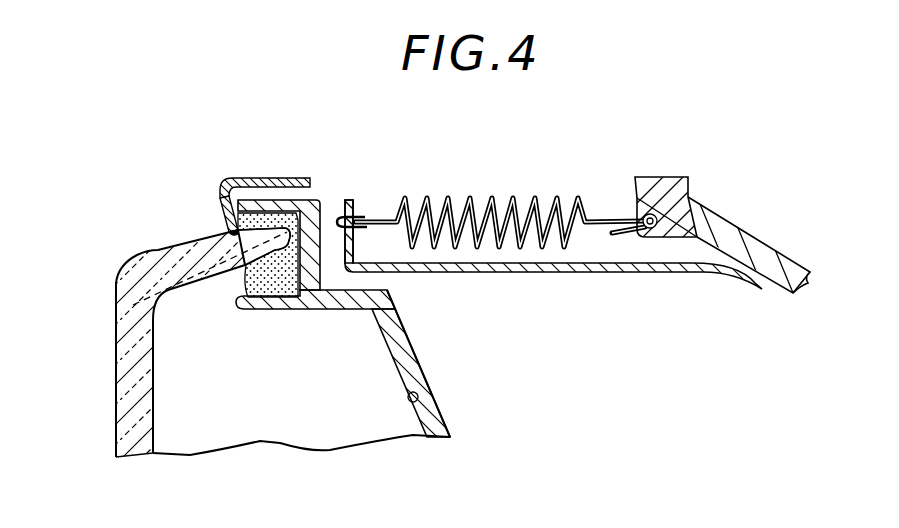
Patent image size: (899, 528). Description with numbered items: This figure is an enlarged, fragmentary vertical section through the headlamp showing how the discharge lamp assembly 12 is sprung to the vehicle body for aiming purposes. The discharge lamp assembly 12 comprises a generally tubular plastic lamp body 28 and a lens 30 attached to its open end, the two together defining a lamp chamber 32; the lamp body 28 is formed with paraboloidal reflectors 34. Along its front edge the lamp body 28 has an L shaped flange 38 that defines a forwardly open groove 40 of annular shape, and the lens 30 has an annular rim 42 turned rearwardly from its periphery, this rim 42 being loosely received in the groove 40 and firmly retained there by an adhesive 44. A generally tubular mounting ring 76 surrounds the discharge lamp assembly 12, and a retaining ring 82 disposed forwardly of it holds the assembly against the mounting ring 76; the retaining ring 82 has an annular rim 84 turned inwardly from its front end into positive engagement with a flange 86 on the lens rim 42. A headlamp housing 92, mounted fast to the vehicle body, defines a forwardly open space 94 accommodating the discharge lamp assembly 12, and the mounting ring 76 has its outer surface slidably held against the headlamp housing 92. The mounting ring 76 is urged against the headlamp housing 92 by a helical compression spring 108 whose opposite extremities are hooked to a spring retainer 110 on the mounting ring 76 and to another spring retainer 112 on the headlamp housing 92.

The discharge lamp assembly 12 is at (107, 263).
The lamp body 28 is at (431, 368).
The lens 30 is at (122, 352).
The lamp chamber 32 is at (425, 395).
The paraboloidal reflectors 34 is at (390, 343).
The L shaped flange 38 is at (318, 198).
The groove 40 is at (293, 311).
The annular rim 42 is at (166, 257).
The adhesive 44 is at (240, 284).
The mounting ring 76 is at (601, 275).
The retaining ring 82 is at (278, 178).
The annular rim 84 is at (226, 200).
The flange 86 is at (222, 214).
The headlamp housing 92 is at (758, 218).
The forwardly open space 94 is at (783, 293).
The helical compression spring 108 is at (483, 200).
The spring retainer 110 is at (349, 198).
The spring retainer 112 is at (634, 198).